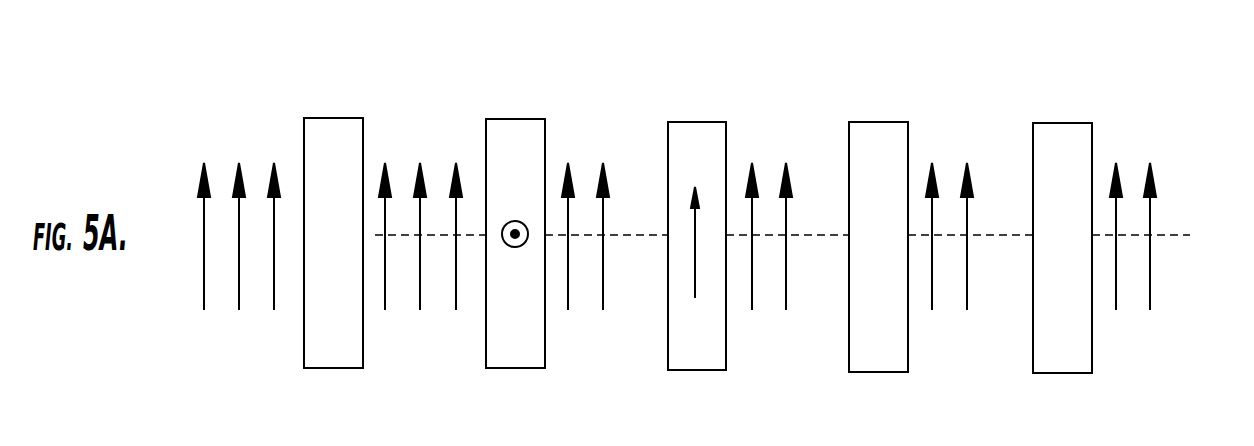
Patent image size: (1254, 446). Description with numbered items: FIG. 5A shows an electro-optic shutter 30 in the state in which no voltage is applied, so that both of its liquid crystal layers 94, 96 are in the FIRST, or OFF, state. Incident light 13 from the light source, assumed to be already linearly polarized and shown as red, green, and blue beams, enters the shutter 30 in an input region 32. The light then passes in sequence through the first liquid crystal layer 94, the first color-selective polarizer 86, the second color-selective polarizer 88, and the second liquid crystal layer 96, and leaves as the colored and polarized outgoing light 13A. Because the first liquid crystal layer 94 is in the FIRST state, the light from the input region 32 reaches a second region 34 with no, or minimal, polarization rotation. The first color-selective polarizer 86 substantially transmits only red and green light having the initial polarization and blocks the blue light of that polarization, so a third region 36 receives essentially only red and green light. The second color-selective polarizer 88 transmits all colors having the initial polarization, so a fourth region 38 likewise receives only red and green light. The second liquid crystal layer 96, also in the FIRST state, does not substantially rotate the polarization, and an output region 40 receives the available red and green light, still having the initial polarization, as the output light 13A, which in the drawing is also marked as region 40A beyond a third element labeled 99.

The light 13 is at (248, 96).
The outgoing light 13A is at (1124, 113).
The electro-optic shutter 30 is at (652, 103).
The input region 32 is at (225, 351).
The second region 34 is at (408, 351).
The third region 36 is at (590, 351).
The fourth region 38 is at (772, 351).
The output region 40 is at (954, 351).
The RG output light after third polarizer 40A is at (1133, 351).
The first color-selective polarizer 86 is at (500, 180).
The second color-selective polarizer 88 is at (682, 180).
The liquid crystal layer 94 is at (316, 178).
The liquid crystal layer 96 is at (863, 180).
The third polarizer P3 99 is at (1047, 182).